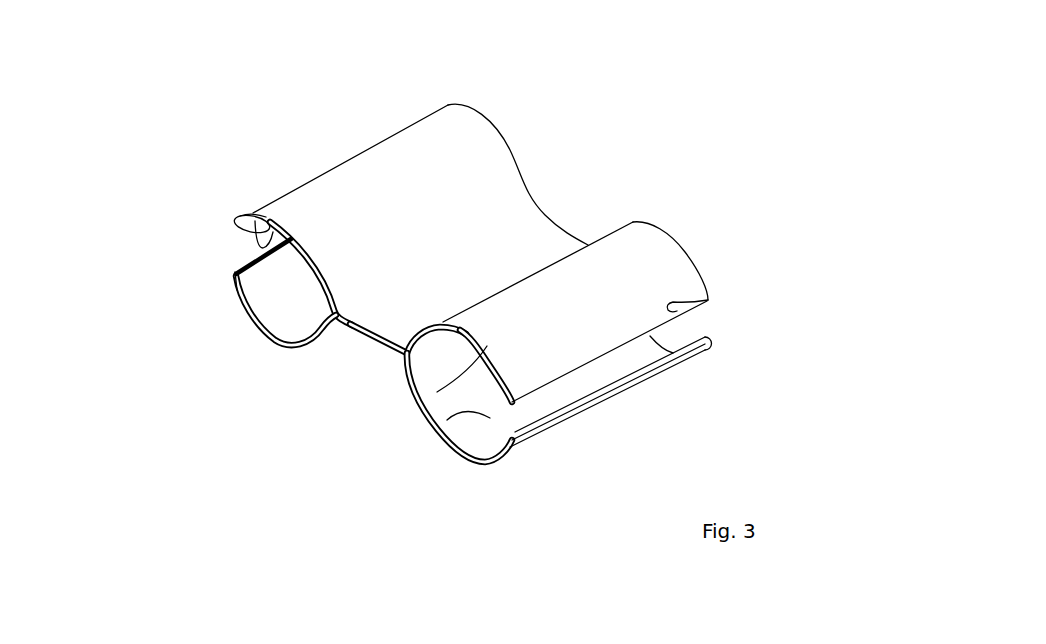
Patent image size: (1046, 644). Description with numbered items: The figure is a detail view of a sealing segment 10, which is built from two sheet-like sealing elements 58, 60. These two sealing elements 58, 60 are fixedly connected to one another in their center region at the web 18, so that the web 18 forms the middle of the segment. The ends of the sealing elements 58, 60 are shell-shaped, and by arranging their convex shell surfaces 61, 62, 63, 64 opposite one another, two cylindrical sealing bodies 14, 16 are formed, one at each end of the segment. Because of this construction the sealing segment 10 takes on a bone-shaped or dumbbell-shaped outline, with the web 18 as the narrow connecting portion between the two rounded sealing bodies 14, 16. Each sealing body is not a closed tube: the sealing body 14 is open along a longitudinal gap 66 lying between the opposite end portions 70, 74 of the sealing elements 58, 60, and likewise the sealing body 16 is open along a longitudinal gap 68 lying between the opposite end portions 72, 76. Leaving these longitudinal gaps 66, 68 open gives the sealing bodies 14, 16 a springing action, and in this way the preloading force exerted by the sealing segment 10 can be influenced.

The sealing segment 10 is at (92, 68).
The cylindrical sealing body 14 is at (472, 166).
The cylindrical sealing body 16 is at (639, 262).
The web 18 is at (556, 227).
The sealing element 58 is at (368, 356).
The sealing element 60 is at (549, 203).
The convex shell surface 61 is at (253, 212).
The convex shell surface 62 is at (294, 284).
The convex shell surface 63 is at (437, 392).
The convex shell surface 64 is at (447, 420).
The longitudinal gap 66 is at (234, 254).
The longitudinal gap 68 is at (699, 319).
The end portion 70 is at (240, 215).
The end portion 72 is at (700, 280).
The end portion 74 is at (233, 291).
The end portion 76 is at (688, 368).